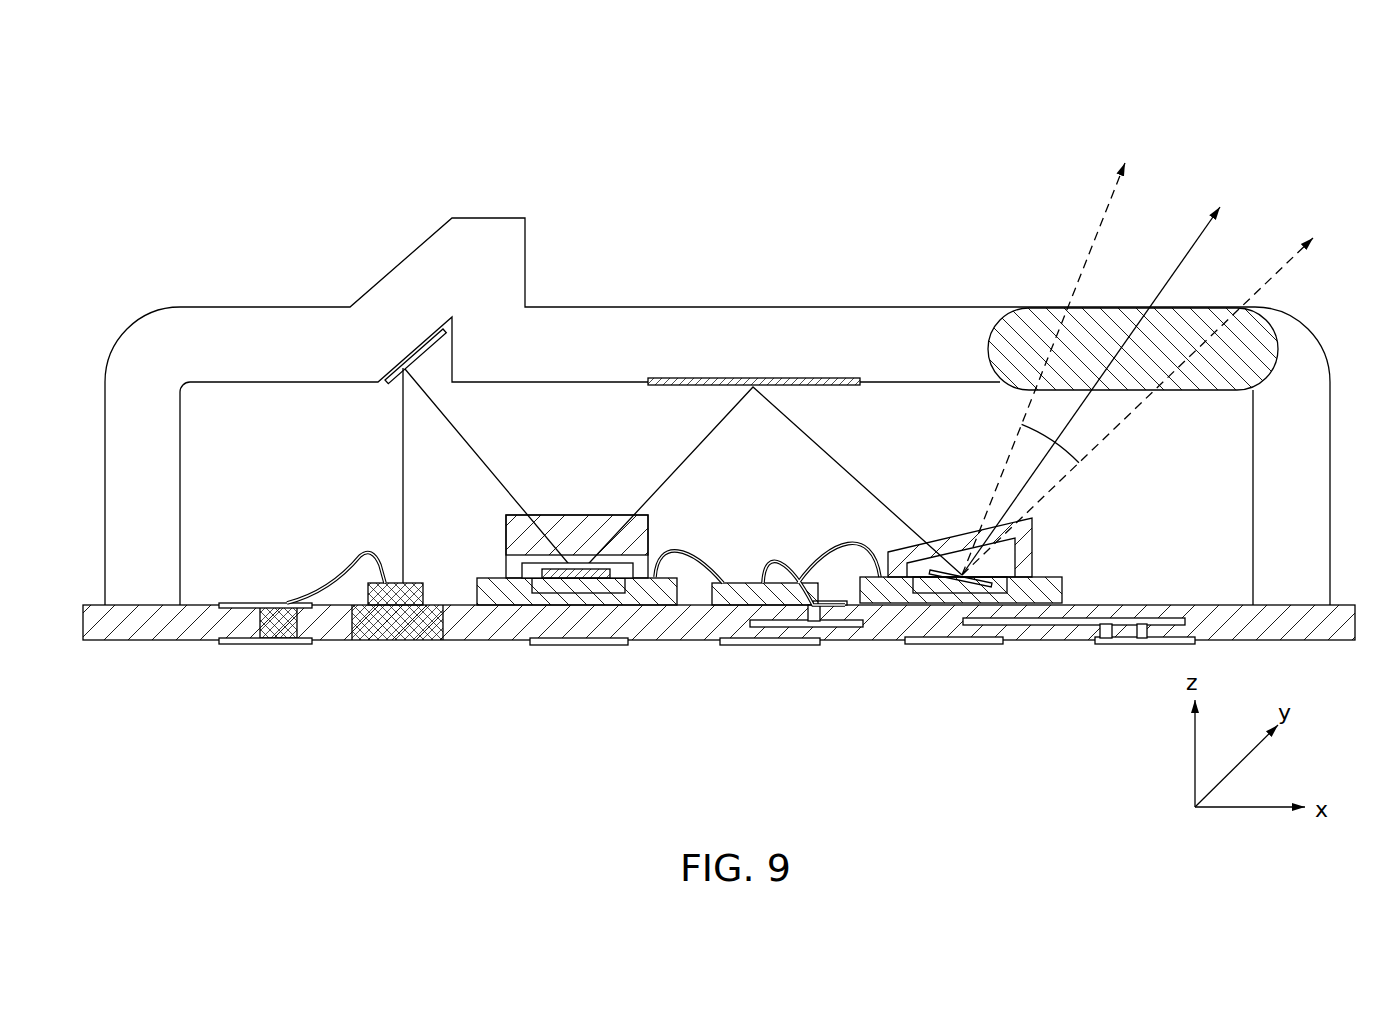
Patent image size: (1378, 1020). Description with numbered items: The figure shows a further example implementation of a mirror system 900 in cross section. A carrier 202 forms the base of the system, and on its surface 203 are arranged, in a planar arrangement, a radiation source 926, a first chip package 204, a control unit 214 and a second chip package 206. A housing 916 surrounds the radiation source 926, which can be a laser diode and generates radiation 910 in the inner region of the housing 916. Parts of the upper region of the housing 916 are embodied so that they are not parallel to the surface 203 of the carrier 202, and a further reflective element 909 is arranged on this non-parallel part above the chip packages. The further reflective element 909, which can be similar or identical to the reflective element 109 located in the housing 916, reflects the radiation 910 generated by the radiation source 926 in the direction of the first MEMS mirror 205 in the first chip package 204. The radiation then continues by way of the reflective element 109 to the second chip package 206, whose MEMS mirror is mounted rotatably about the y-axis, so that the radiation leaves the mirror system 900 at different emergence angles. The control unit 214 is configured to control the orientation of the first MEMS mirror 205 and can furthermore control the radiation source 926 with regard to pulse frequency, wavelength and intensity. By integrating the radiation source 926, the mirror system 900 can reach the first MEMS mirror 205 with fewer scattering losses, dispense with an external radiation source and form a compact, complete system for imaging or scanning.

The mirror system 900 is at (1165, 102).
The housing 916 is at (748, 305).
The further reflective element 909 is at (426, 352).
The radiation 910 is at (405, 493).
The reflective element 109 is at (848, 389).
The first chip package 204 is at (548, 513).
The first MEMS mirror 205 is at (537, 561).
The control unit 214 is at (745, 541).
The second chip package 206 is at (950, 521).
The radiation source 926 is at (372, 525).
The surface 203 is at (205, 603).
The carrier 202 is at (133, 645).